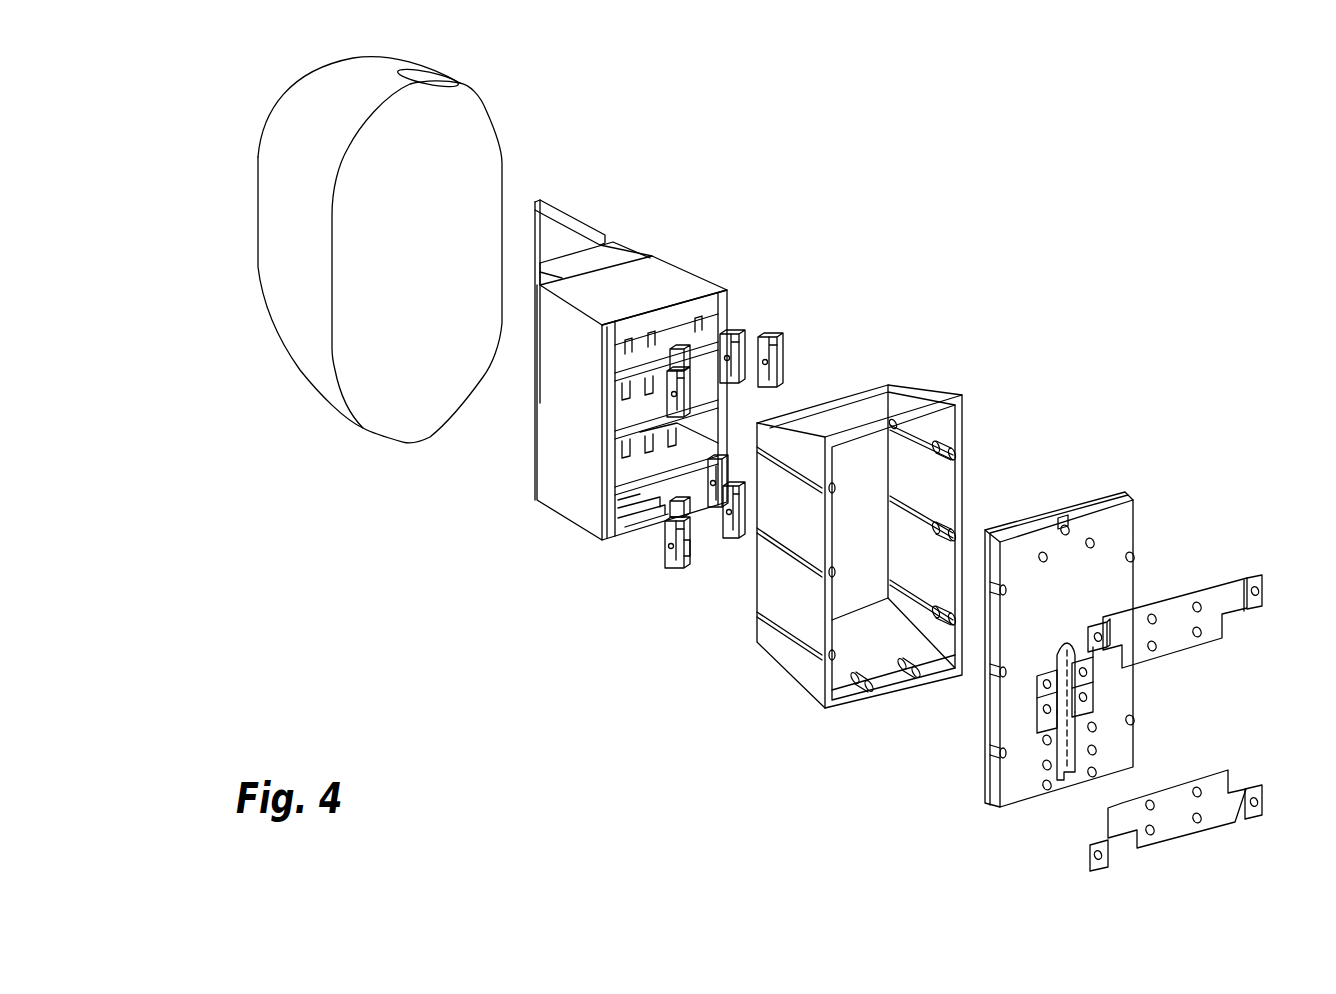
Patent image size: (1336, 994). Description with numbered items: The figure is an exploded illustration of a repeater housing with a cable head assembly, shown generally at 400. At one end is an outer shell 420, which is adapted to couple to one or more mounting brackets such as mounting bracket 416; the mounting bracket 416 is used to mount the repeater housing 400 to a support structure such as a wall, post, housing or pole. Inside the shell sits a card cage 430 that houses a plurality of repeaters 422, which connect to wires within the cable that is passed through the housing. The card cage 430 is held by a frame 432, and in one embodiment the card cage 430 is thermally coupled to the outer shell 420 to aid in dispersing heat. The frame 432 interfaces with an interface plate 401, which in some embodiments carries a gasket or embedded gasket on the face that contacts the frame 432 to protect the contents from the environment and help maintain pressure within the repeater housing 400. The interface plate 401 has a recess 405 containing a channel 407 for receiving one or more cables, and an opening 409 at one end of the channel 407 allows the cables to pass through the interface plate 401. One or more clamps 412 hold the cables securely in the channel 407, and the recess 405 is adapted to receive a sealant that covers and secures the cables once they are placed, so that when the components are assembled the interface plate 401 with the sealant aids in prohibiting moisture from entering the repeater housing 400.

The repeater housing 400 is at (478, 597).
The outer shell 420 is at (292, 358).
The card cage 430 is at (658, 263).
The repeaters 422 is at (667, 560).
The frame 432 is at (930, 477).
The interface plate 401 is at (1127, 527).
The opening 409 is at (1047, 643).
The channel 407 is at (1067, 781).
The recess 405 is at (1038, 717).
The clamps 412 is at (1090, 680).
The mounting bracket 416 is at (1215, 620).